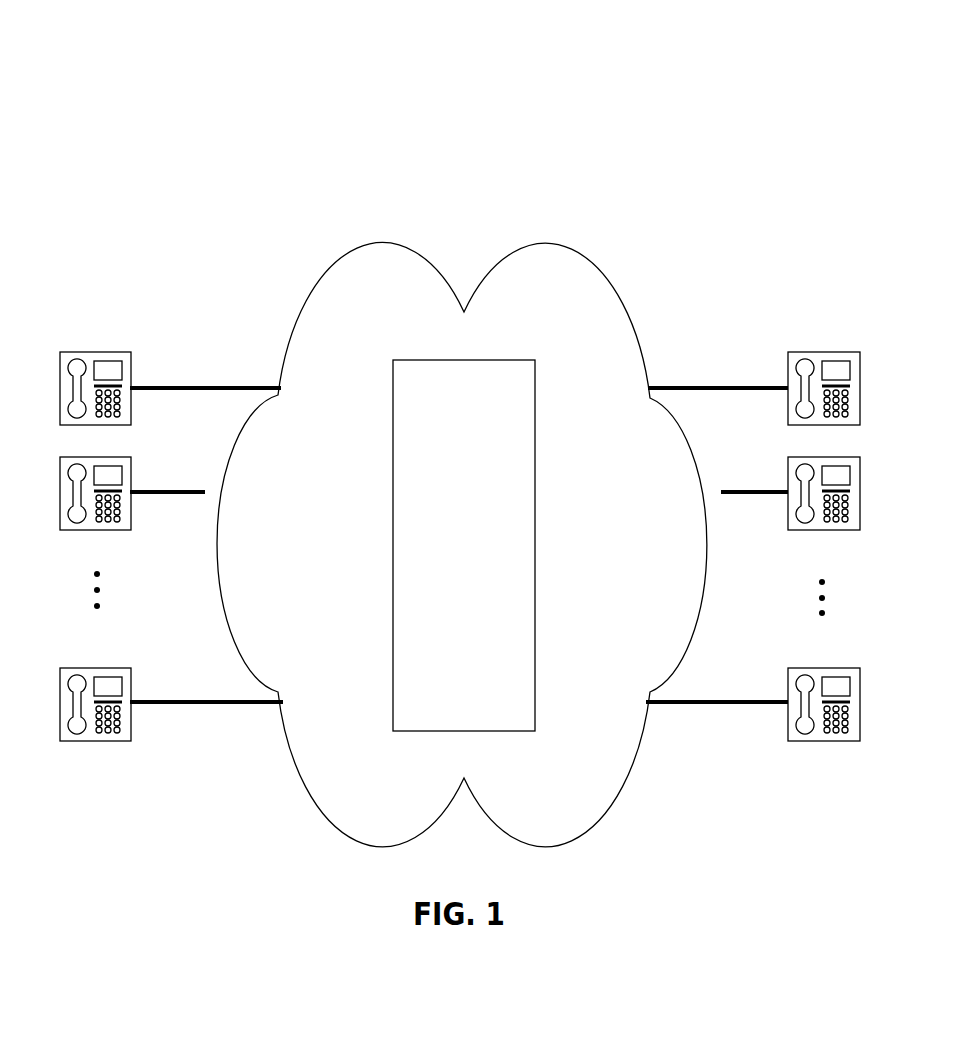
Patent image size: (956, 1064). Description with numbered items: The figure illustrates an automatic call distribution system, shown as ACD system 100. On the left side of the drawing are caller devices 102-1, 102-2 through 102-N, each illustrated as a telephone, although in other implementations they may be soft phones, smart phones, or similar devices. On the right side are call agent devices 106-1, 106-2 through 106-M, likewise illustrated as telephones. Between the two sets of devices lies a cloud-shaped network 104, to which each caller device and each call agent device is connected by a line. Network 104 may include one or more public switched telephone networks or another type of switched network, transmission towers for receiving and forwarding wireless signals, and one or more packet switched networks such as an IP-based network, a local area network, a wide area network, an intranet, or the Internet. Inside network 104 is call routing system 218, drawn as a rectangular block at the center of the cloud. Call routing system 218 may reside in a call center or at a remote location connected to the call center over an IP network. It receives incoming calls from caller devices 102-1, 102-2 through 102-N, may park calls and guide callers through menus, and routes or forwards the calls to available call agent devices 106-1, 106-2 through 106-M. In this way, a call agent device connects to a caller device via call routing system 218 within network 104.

The ACD system 100 is at (464, 84).
The network 104 is at (387, 245).
The call routing system 218 is at (464, 545).
The caller device 102-1 is at (131, 352).
The caller device 102-2 is at (132, 462).
The caller device 102-N is at (132, 666).
The call agent device 106-1 is at (788, 358).
The call agent device 106-2 is at (788, 462).
The call agent device 106-M is at (789, 670).